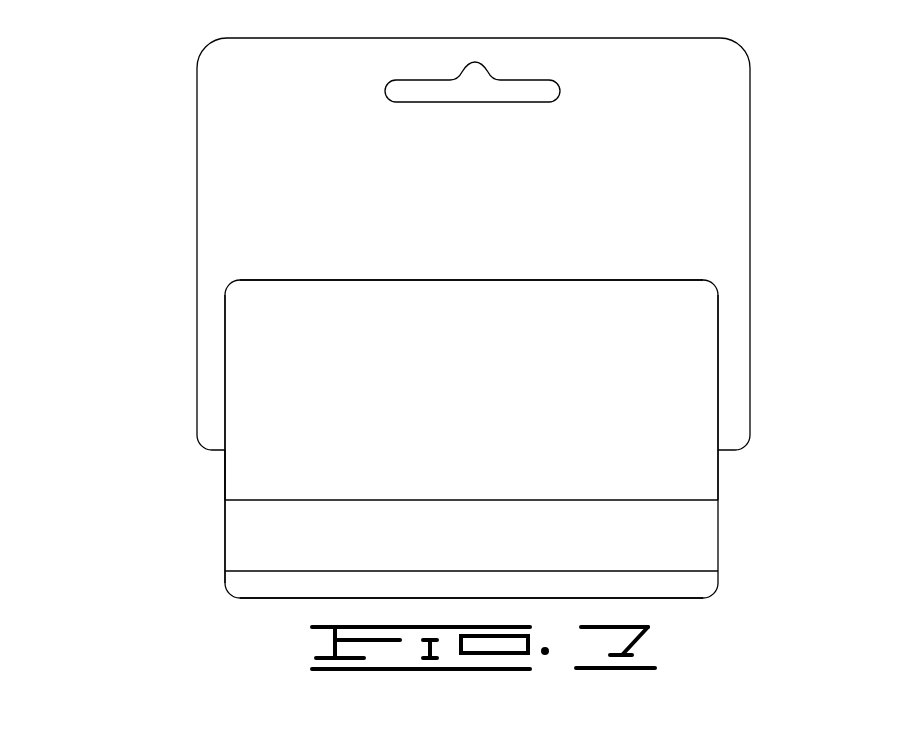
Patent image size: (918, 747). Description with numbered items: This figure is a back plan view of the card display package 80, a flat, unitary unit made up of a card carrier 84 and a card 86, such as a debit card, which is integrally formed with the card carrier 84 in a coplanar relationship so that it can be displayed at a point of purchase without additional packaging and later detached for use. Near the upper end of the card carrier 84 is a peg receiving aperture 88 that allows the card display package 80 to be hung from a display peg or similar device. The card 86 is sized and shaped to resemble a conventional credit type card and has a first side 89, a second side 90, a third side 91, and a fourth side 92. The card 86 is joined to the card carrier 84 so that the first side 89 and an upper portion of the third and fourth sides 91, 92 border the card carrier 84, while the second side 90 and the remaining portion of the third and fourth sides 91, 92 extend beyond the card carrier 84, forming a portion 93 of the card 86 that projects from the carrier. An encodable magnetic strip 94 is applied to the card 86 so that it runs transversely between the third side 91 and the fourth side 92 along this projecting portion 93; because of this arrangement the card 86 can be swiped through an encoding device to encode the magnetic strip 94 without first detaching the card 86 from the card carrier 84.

The card display package 80 is at (752, 98).
The card carrier 84 is at (197, 139).
The card 86 is at (720, 474).
The peg receiving aperture 88 is at (512, 102).
The first side 89 is at (377, 280).
The second side 90 is at (268, 598).
The third side 91 is at (228, 425).
The fourth side 92 is at (718, 396).
The portion of the card 93 is at (226, 480).
The magnetic strip 94 is at (697, 548).